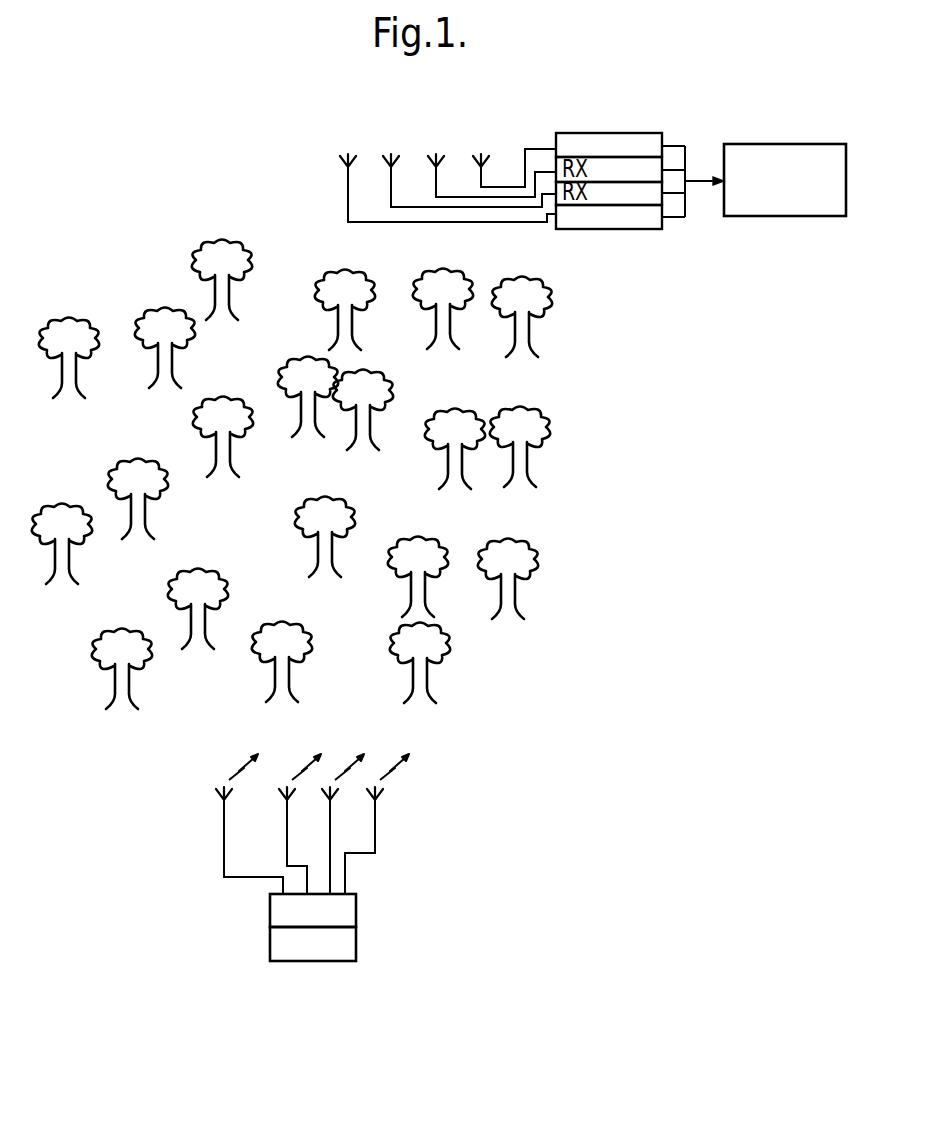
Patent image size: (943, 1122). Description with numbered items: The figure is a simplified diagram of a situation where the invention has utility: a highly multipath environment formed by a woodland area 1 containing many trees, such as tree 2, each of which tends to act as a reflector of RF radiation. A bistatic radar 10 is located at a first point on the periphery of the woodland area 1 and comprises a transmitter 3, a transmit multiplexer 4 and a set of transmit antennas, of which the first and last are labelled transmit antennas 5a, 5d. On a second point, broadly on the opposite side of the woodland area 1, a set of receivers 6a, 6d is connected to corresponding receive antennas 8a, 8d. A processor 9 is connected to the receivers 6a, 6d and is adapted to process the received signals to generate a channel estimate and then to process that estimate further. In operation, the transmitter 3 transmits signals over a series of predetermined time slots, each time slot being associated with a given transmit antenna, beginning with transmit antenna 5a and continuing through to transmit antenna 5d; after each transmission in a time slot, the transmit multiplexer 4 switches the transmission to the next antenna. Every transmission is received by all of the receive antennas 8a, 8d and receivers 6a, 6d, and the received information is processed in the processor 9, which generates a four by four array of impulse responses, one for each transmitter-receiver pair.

The woodland area 1 is at (344, 475).
The tree 2 is at (541, 466).
The transmitter 3 is at (356, 946).
The transmit multiplexer 4 is at (356, 912).
The transmit antenna 5a is at (220, 796).
The transmit antenna 5d is at (383, 796).
The receiver 6a is at (634, 222).
The receiver 6d is at (633, 138).
The receive antenna 8a is at (345, 158).
The receive antenna 8d is at (493, 165).
The processor 9 is at (757, 218).
The bistatic radar 10 is at (354, 873).